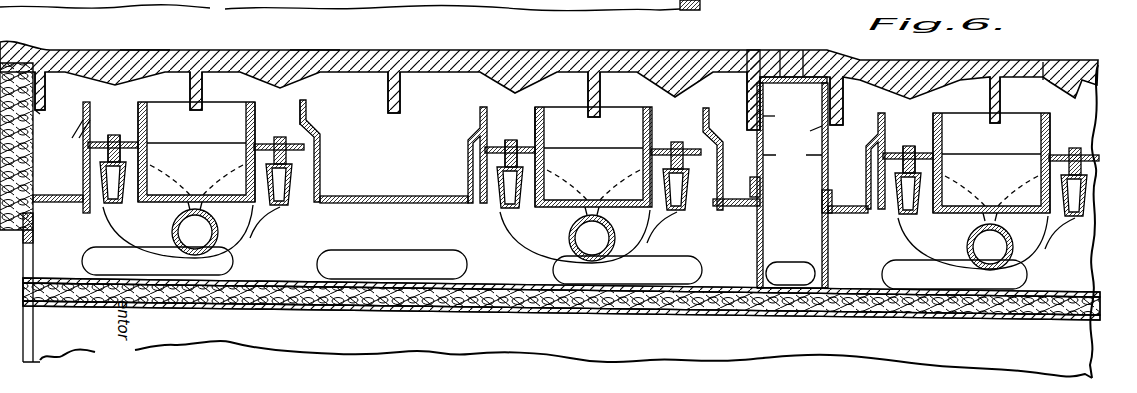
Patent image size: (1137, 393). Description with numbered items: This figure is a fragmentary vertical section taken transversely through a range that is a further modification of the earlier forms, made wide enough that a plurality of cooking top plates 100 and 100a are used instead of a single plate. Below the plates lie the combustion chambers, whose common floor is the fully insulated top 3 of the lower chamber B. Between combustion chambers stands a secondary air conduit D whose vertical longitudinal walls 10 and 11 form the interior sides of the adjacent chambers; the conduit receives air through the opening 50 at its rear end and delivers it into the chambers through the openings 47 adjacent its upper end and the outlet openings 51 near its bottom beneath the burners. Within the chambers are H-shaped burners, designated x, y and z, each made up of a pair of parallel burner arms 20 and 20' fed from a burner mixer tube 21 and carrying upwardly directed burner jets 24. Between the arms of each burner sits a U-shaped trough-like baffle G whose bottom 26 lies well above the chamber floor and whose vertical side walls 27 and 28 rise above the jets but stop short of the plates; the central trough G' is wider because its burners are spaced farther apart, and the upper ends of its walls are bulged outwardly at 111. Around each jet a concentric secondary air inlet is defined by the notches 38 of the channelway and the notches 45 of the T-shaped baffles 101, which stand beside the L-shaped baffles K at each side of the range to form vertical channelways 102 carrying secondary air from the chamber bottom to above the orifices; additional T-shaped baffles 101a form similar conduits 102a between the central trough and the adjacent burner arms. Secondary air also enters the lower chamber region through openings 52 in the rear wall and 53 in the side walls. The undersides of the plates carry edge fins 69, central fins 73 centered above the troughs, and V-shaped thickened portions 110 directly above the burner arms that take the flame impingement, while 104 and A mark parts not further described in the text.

The insulated top of the chamber 3 is at (397, 306).
The wall of the secondary air conduit 10 is at (779, 117).
The wall of the secondary air conduit 11 is at (803, 134).
The burner arm 20 is at (509, 191).
The burner arm 20' is at (676, 199).
The burner mixer tube 21 is at (592, 239).
The burner jet 24 is at (910, 147).
The bottom of the trough-like baffle 26 is at (176, 194).
The side wall of the trough-like baffle 27 is at (160, 97).
The side wall of the trough-like baffle 28 is at (248, 114).
The notch of the channelway 38 is at (538, 131).
The notch of the T-shaped baffle 45 is at (108, 138).
The air inlet opening 47 is at (792, 155).
The air inlet opening 50 is at (791, 262).
The secondary air outlet opening 51 is at (760, 273).
The opening in the rear wall 52 is at (554, 268).
The opening in the side wall 53 is at (32, 256).
The fin 69 is at (44, 100).
The fin 73 is at (202, 90).
The cooking top plate 100 is at (537, 44).
The cooking top plate 100a is at (1043, 73).
The T-shaped baffle 101 is at (85, 205).
The T-shaped baffle 101a is at (302, 210).
The vertically extending channelway 102 is at (84, 135).
The vertically extending secondary air conduit 102a is at (320, 180).
The column top 104 is at (747, 52).
The V-shaped thickened portion 110 is at (133, 53).
The outwardly bulged upper ends 111 is at (314, 120).
The compartment A is at (347, 117).
The chamber B is at (569, 221).
The secondary air conduit D is at (791, 185).
The trough-like baffle G is at (594, 157).
The center U-shaped conduit G' is at (384, 155).
The L-shaped baffle K is at (72, 150).
The burner x is at (191, 230).
The burner y is at (533, 225).
The burner z is at (934, 228).